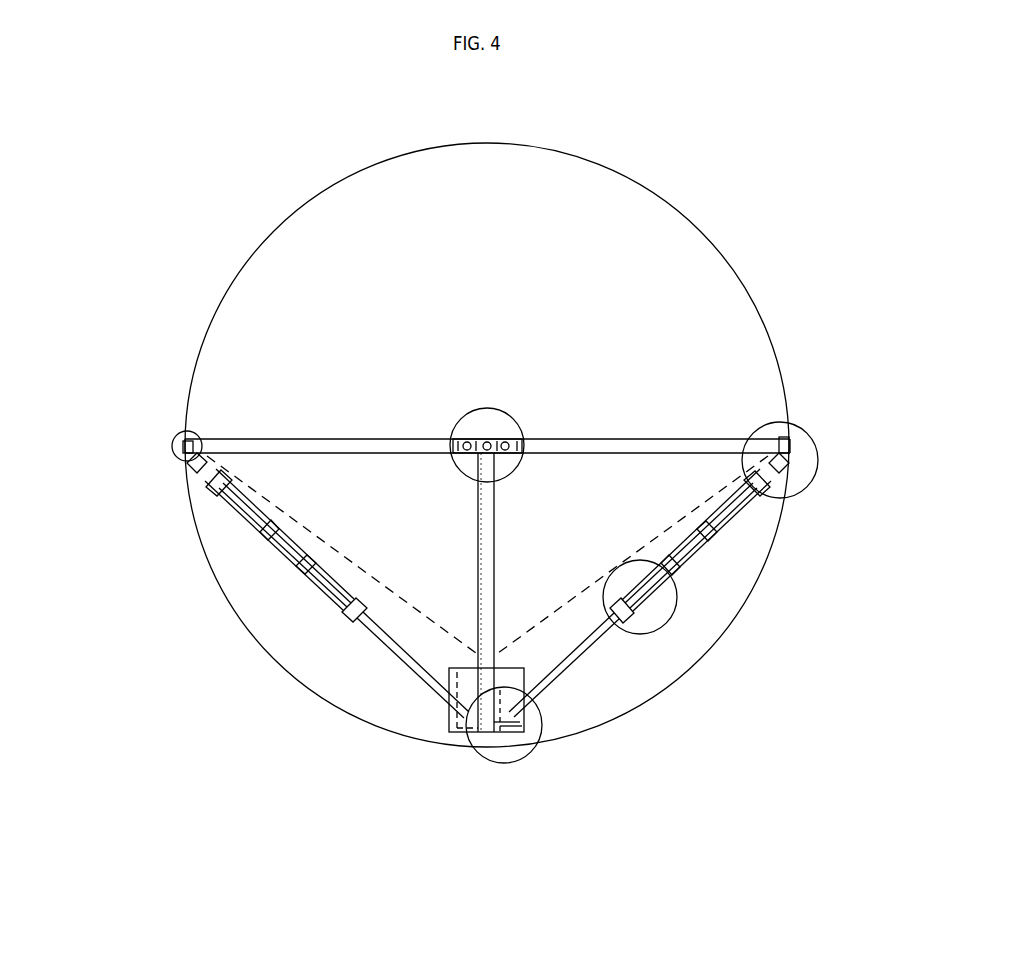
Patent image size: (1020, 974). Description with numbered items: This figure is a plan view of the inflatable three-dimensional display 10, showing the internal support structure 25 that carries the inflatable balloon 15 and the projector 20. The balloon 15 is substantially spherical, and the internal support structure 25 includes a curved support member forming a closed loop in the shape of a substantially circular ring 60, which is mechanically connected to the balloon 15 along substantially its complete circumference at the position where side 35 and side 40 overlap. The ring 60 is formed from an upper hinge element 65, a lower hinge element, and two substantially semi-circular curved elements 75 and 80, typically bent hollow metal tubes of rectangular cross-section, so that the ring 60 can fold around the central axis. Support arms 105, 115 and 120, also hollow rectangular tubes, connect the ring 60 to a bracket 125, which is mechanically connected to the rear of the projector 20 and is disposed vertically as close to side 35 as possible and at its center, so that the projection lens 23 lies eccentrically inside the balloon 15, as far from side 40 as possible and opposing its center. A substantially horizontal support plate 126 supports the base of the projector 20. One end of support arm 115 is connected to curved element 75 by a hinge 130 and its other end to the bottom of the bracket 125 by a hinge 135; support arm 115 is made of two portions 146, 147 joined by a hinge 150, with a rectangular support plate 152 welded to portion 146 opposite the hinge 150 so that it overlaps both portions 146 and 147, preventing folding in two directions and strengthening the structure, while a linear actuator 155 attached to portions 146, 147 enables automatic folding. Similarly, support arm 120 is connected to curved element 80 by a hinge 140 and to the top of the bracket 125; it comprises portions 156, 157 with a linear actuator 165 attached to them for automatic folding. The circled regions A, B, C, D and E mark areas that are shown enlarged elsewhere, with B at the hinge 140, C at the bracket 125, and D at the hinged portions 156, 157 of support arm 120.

The inflatable three-dimensional display 10 is at (490, 464).
The inflatable balloon 15 is at (487, 408).
The projector 20 is at (258, 601).
The projection lens 23 is at (638, 749).
The internal support structure 25 is at (480, 283).
The side 35 is at (720, 591).
The side 40 is at (487, 408).
The ring 60 is at (222, 324).
The upper hinge element 65 is at (637, 310).
The curved element 75 is at (165, 360).
The curved element 80 is at (600, 379).
The support arm 105 is at (657, 607).
The support arm 115 is at (203, 540).
The support arm 120 is at (784, 548).
The bracket 125 is at (524, 765).
The support plate 126 is at (572, 776).
The hinge 130 is at (140, 472).
The hinge 135 is at (468, 763).
The hinge 140 is at (838, 480).
The portion 146 is at (165, 534).
The portion 147 is at (271, 665).
The hinge 150 is at (211, 604).
The support plate 152 is at (186, 571).
The linear actuator 155 is at (209, 574).
The portion 156 is at (772, 540).
The portion 157 is at (743, 642).
The linear actuator 165 is at (758, 545).
The detail A is at (658, 324).
The region B is at (828, 442).
The region C is at (486, 763).
The region D is at (743, 623).
The detail E is at (127, 420).